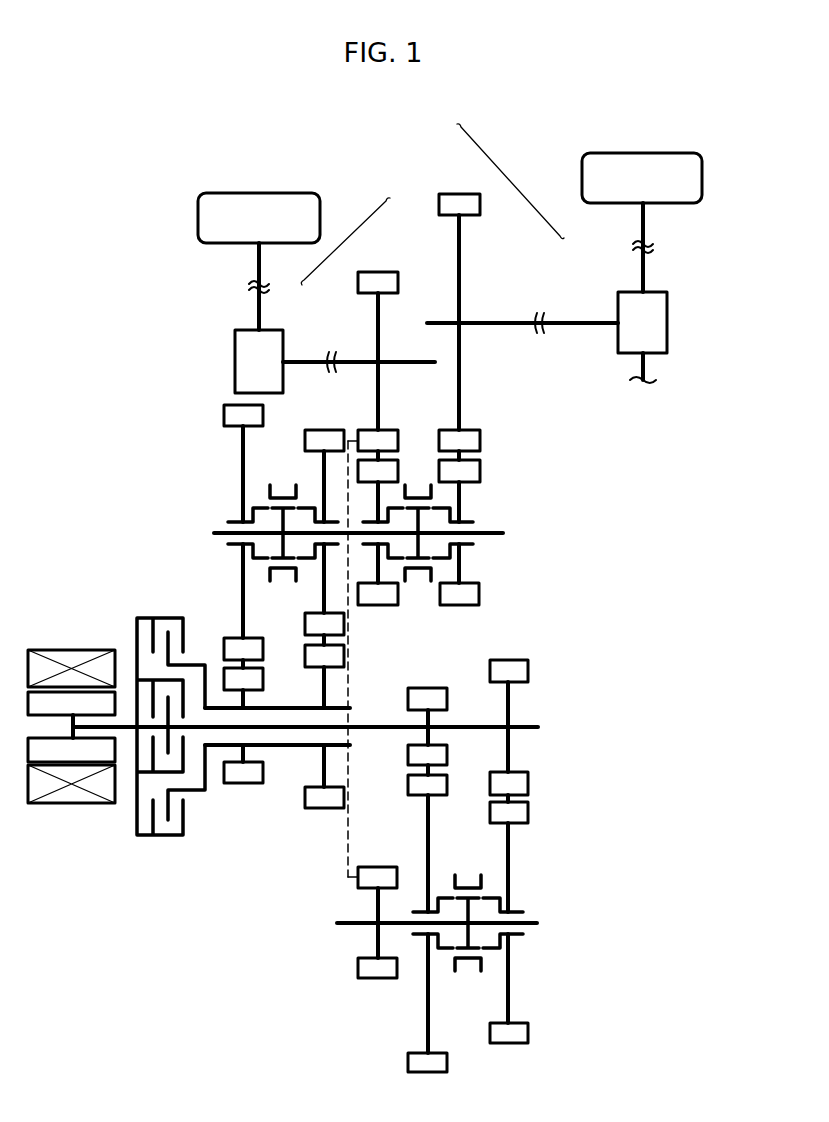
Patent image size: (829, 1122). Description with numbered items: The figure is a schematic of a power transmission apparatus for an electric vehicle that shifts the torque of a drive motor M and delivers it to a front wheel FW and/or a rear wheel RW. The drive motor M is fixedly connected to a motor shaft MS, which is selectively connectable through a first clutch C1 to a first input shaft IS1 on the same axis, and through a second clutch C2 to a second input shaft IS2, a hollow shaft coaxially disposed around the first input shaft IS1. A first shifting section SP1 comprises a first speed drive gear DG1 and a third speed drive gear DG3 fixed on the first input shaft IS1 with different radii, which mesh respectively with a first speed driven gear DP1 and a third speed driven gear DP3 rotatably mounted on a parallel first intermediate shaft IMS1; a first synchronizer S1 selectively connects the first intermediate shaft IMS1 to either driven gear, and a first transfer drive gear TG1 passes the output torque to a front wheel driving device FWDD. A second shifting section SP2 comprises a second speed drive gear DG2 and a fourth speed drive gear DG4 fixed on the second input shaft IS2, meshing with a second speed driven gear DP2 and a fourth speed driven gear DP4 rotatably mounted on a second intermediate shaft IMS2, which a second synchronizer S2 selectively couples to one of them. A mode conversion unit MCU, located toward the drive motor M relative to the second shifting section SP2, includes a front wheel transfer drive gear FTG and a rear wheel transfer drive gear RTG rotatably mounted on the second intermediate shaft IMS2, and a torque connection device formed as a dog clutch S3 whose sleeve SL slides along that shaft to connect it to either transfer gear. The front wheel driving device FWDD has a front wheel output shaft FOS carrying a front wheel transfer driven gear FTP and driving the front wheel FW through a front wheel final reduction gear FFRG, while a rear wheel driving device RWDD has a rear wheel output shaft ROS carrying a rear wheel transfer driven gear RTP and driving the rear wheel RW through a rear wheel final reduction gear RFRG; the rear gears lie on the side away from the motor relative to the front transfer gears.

The front wheel FW is at (259, 193).
The front wheel driving device FWDD is at (355, 231).
The front wheel transfer driven gear FTP is at (378, 272).
The front wheel output shaft FOS is at (352, 360).
The front wheel final reduction gear FFRG is at (235, 362).
The second speed driven gear DP2 is at (224, 415).
The fourth speed driven gear DP4 is at (305, 440).
The second shifting section SP2 is at (180, 502).
The rear wheel transfer driven gear RTP is at (459, 194).
The rear wheel driving device RWDD is at (503, 172).
The rear wheel output shaft ROS is at (508, 323).
The rear wheel RW is at (645, 153).
The rear wheel final reduction gear RFRG is at (667, 323).
The dog clutch S3 is at (418, 466).
The sleeve SL is at (433, 492).
The second intermediate shaft IMS2 is at (490, 530).
The mode conversion unit MCU is at (540, 512).
The second synchronizer S2 is at (282, 582).
The front wheel transfer drive gear FTG is at (380, 606).
The rear wheel transfer drive gear RTG is at (459, 606).
The drive motor M is at (42, 650).
The first clutch C1 is at (163, 680).
The second clutch C2 is at (148, 618).
The motor shaft MS is at (127, 730).
The second input shaft IS2 is at (340, 708).
The first input shaft IS1 is at (529, 727).
The first speed drive gear DG1 is at (408, 752).
The first speed driven gear DP1 is at (408, 784).
The third speed drive gear DG3 is at (528, 781).
The third speed driven gear DP3 is at (528, 812).
The second speed drive gear DG2 is at (244, 784).
The fourth speed drive gear DG4 is at (324, 808).
The first transfer drive gear TG1 is at (378, 978).
The first intermediate shaft IMS1 is at (525, 921).
The first synchronizer S1 is at (467, 975).
The first shifting section SP1 is at (552, 962).